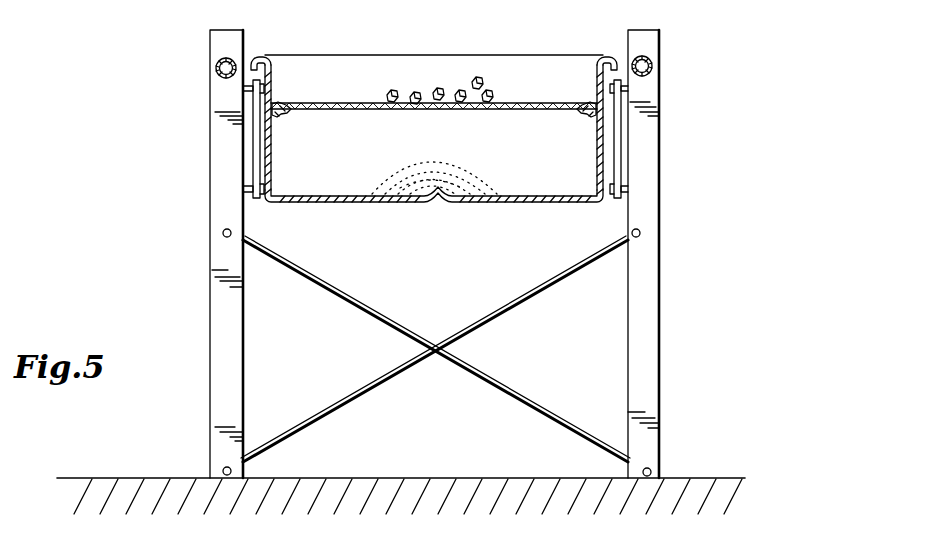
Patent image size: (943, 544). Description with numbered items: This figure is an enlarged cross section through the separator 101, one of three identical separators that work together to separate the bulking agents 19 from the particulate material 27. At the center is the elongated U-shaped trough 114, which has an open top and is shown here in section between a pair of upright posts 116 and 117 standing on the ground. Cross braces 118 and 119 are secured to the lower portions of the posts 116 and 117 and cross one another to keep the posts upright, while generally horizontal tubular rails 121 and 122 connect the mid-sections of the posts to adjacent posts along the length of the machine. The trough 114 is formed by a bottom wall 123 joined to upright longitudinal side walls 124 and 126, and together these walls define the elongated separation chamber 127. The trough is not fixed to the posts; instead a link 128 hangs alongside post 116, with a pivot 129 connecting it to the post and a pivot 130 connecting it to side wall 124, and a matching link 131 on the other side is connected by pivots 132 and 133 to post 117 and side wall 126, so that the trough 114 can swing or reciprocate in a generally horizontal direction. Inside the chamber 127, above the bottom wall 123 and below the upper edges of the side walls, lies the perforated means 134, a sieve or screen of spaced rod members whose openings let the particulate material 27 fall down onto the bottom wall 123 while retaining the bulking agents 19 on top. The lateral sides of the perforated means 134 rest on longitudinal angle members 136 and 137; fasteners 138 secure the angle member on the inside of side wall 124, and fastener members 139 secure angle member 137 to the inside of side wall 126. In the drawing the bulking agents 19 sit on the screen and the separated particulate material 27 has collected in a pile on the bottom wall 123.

The separator 101 is at (176, 35).
The trough 114 is at (540, 49).
The upright post 116 is at (226, 33).
The upright post 117 is at (643, 36).
The cross brace 118 is at (338, 413).
The cross brace 119 is at (526, 411).
The tubular rail 121 is at (215, 68).
The tubular rail 122 is at (657, 65).
The bottom wall 123 is at (392, 198).
The side wall 124 is at (278, 167).
The side wall 126 is at (597, 166).
The separation chamber 127 is at (363, 153).
The link 128 is at (257, 137).
The pivot 129 is at (252, 90).
The pivot 130 is at (253, 190).
The link 131 is at (620, 136).
The pivot 132 is at (622, 88).
The pivot 133 is at (622, 190).
The perforated means 134 is at (370, 92).
The angle member 136 is at (284, 118).
The angle member 137 is at (593, 114).
The fastener 138 is at (283, 103).
The fastener member 139 is at (590, 101).
The bulking agents 19 is at (442, 87).
The particulate material 27 is at (479, 196).